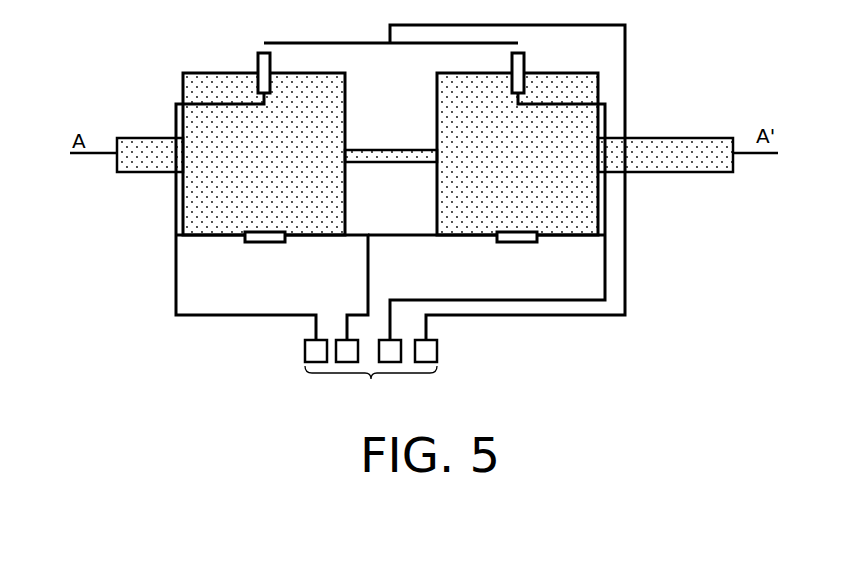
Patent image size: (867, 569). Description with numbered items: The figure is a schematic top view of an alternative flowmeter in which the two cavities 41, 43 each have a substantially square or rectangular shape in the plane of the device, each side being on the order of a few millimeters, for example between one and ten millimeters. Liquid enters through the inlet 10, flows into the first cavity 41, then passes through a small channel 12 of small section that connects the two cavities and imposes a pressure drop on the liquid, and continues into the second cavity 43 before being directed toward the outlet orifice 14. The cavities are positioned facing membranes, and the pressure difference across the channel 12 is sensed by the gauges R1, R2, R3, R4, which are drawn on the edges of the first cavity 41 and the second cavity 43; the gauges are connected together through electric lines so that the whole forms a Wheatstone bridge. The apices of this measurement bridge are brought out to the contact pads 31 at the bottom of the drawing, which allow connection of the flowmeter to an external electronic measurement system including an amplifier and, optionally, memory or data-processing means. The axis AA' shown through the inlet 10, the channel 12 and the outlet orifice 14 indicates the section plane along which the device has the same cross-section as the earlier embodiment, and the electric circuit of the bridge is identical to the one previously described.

The inlet 10 is at (148, 152).
The channel 12 is at (390, 153).
The outlet orifice 14 is at (677, 152).
The first cavity 41 is at (297, 205).
The second cavity 43 is at (485, 205).
The gauge R1 is at (516, 68).
The gauge R2 is at (520, 243).
The gauge R3 is at (258, 243).
The gauge R4 is at (258, 63).
The contact pads 31 is at (371, 371).